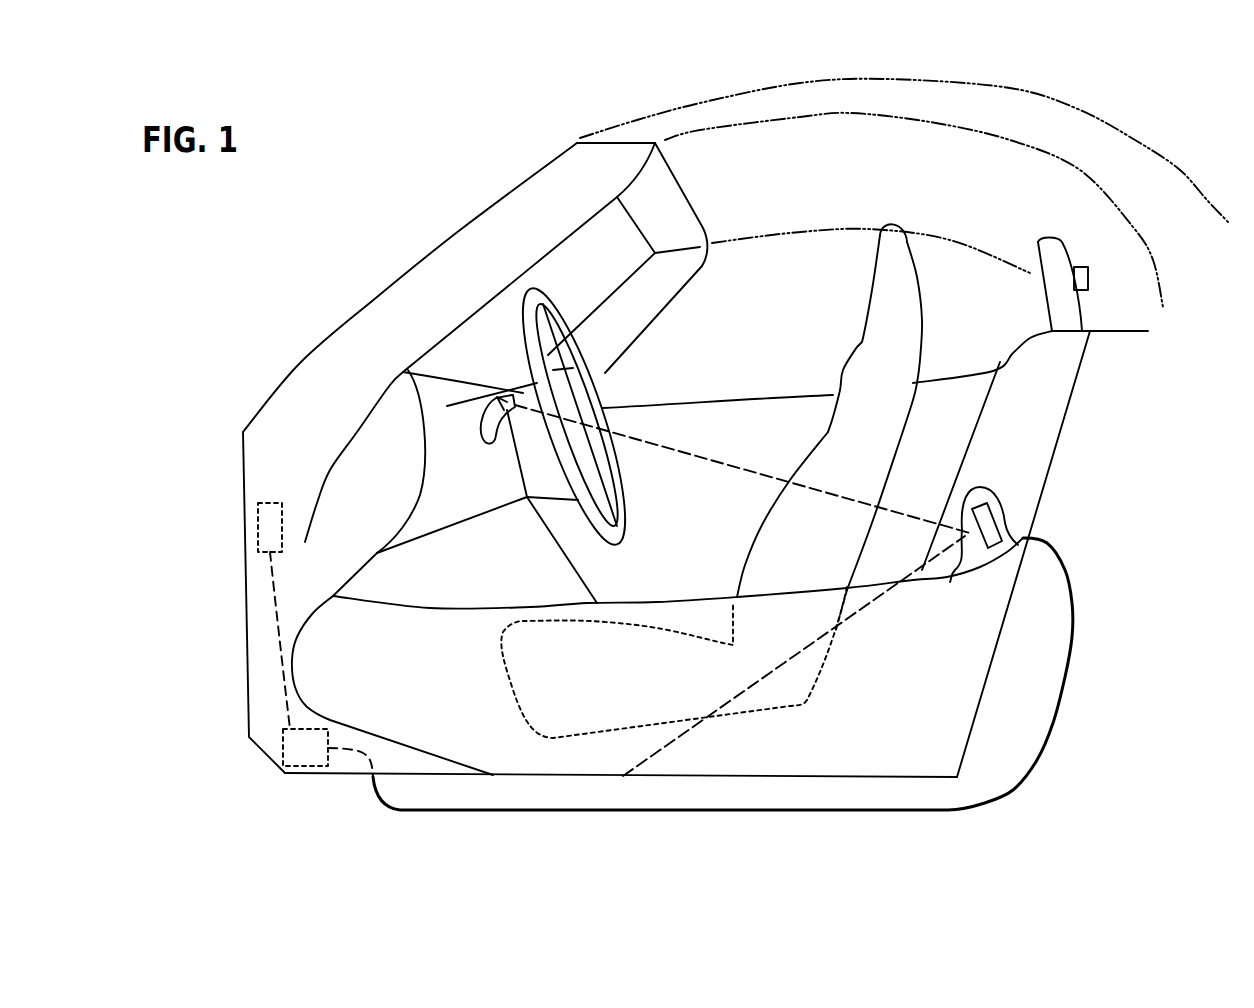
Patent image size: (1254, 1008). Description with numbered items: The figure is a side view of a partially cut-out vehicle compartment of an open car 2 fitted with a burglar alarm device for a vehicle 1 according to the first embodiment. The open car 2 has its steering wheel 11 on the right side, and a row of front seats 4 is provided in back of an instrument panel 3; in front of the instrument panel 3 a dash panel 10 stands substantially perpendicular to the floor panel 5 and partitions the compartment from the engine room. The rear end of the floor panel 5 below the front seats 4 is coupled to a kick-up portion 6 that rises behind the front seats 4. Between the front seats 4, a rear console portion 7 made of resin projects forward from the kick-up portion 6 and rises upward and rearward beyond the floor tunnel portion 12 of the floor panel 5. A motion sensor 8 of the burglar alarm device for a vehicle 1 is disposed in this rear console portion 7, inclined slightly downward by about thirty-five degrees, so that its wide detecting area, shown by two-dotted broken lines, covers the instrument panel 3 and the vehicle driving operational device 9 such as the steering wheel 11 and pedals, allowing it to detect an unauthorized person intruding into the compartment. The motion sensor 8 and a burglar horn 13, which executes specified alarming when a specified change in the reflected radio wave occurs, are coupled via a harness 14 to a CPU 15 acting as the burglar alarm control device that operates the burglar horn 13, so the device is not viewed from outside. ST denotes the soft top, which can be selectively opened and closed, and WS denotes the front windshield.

The burglar alarm device for a vehicle 1 is at (1008, 492).
The open car 2 is at (764, 236).
The instrument panel 3 is at (458, 390).
The front seats 4 is at (899, 243).
The floor panel 5 is at (836, 774).
The kick-up portion 6 is at (982, 690).
The rear console portion 7 is at (1016, 345).
The motion sensor 8 is at (1007, 530).
The vehicle driving operational device 9 is at (630, 488).
The dash panel 10 is at (243, 483).
The steering wheel 11 is at (597, 394).
The floor tunnel portion 12 is at (655, 604).
The burglar horn 13 is at (258, 523).
The harness 14 is at (277, 617).
The CPU 15 is at (262, 748).
The front windshield WS is at (477, 213).
The soft top ST is at (1062, 122).